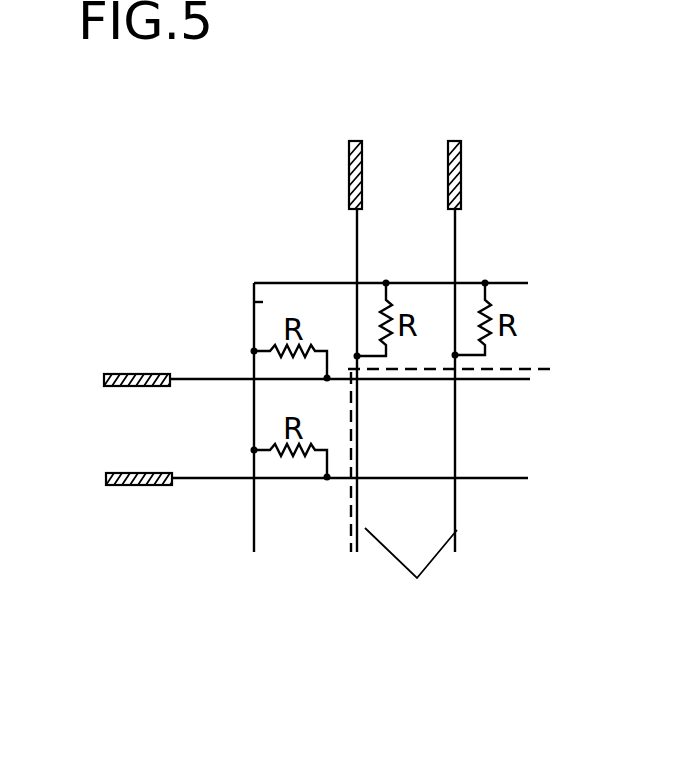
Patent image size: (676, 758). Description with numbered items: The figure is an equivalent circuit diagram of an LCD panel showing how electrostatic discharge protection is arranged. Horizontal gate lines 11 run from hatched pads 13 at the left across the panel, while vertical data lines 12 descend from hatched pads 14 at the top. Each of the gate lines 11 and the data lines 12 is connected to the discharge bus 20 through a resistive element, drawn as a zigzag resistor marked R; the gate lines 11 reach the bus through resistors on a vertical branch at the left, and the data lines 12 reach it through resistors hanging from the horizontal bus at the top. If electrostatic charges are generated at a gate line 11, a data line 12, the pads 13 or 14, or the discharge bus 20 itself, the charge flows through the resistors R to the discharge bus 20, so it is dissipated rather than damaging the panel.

The gate line 11 is at (219, 379).
The data line 12 is at (404, 420).
The pad 13 is at (148, 473).
The pad 14 is at (362, 187).
The discharge bus 20 is at (507, 281).